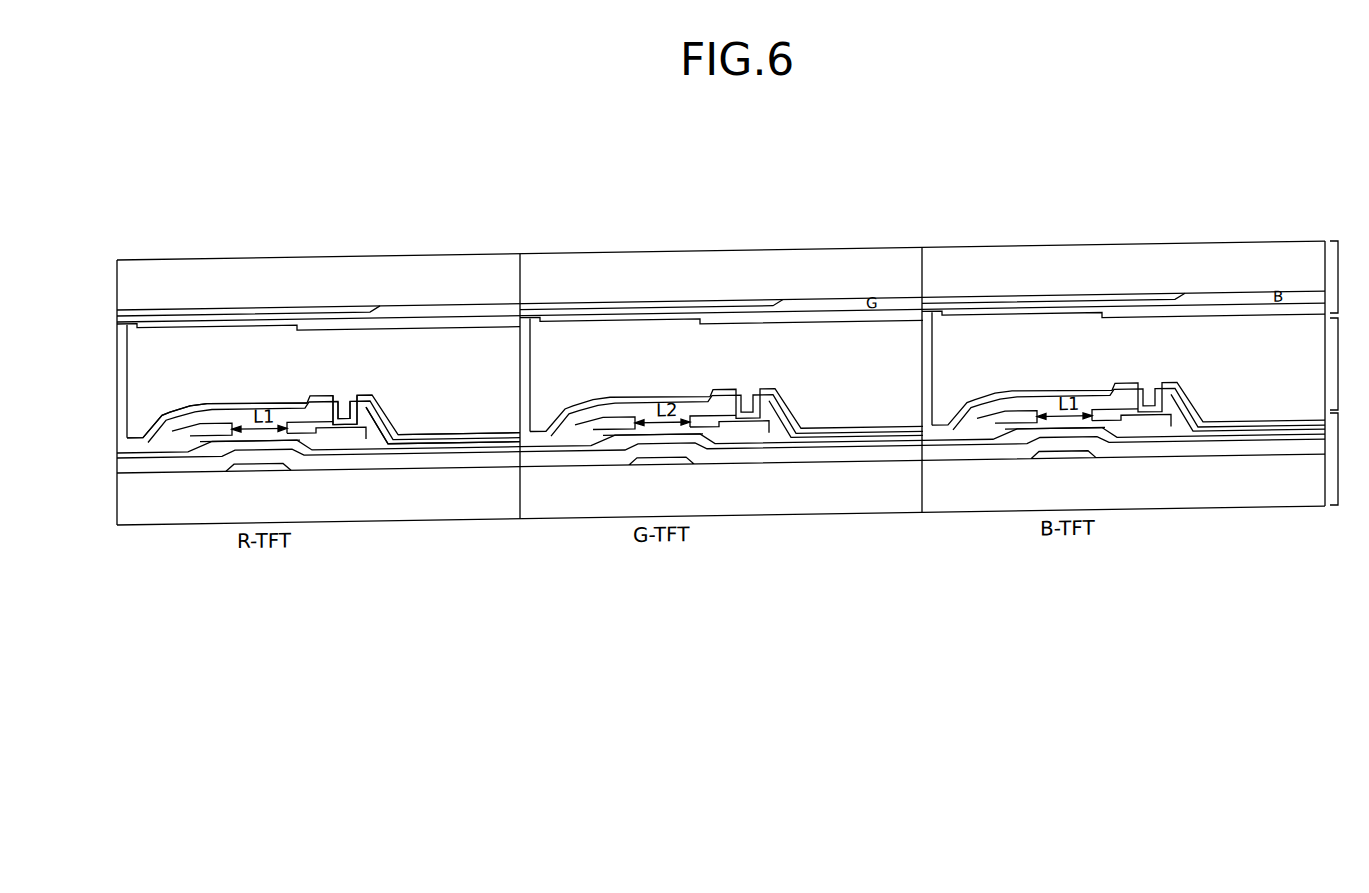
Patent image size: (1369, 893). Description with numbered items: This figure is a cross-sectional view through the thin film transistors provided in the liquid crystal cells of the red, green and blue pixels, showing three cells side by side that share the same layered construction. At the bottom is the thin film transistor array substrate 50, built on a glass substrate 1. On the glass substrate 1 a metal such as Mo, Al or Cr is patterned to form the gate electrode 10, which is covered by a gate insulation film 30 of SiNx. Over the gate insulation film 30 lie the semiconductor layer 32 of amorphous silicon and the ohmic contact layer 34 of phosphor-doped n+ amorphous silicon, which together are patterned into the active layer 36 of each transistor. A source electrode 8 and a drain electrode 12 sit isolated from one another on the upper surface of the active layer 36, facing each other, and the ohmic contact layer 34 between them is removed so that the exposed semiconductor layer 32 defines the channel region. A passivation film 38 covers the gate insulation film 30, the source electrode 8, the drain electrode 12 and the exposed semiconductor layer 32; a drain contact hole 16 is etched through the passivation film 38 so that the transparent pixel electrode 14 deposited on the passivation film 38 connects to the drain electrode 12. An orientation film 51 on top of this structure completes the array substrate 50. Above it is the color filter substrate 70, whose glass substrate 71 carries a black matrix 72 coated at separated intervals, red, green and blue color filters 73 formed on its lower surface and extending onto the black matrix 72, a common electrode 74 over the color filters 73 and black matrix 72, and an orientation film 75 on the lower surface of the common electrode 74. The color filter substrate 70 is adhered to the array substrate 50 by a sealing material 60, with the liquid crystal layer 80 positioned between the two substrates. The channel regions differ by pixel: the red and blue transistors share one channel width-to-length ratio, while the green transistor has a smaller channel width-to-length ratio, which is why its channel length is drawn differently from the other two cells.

The glass substrate 1 is at (120, 505).
The source electrode 8 is at (216, 427).
The gate electrode 10 is at (250, 468).
The drain electrode 12 is at (324, 425).
The pixel electrode 14 is at (483, 443).
The drain contact hole 16 is at (348, 407).
The gate insulation film 30 is at (120, 472).
The semiconductor layer 32 is at (386, 424).
The ohmic contact layer 34 is at (370, 438).
The active layer 36 is at (414, 378).
The passivation film 38 is at (120, 455).
The thin film transistor array substrate 50 is at (1348, 459).
The orientation film 51 is at (122, 438).
The sealing material 60 is at (120, 393).
The color filter substrate 70 is at (1348, 277).
The glass substrate 71 is at (125, 278).
The black matrix 72 is at (122, 310).
The color filters 73 is at (434, 318).
The common electrode 74 is at (120, 322).
The orientation film 75 is at (127, 330).
The liquid crystal layer 80 is at (1348, 364).